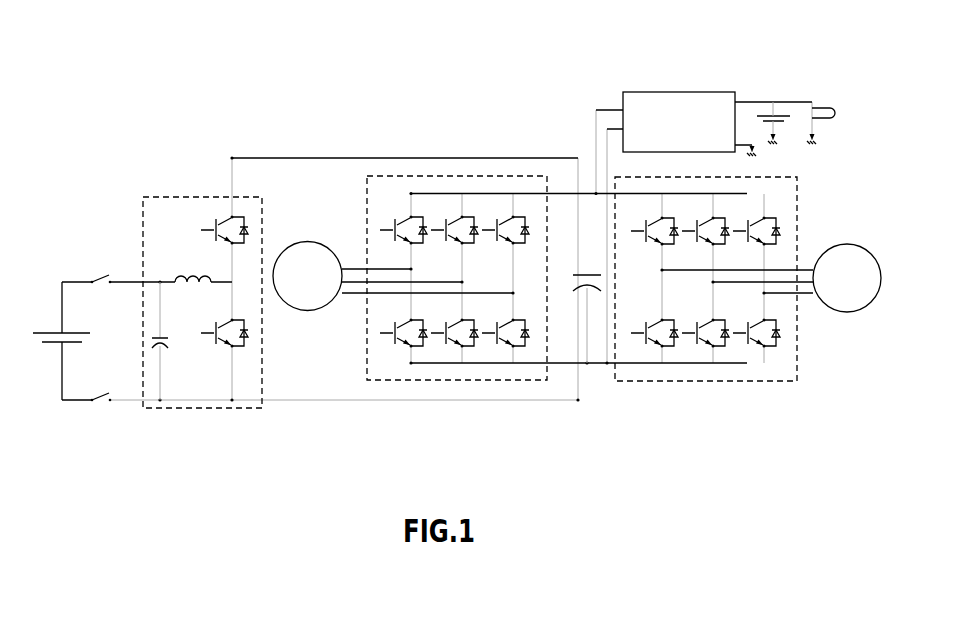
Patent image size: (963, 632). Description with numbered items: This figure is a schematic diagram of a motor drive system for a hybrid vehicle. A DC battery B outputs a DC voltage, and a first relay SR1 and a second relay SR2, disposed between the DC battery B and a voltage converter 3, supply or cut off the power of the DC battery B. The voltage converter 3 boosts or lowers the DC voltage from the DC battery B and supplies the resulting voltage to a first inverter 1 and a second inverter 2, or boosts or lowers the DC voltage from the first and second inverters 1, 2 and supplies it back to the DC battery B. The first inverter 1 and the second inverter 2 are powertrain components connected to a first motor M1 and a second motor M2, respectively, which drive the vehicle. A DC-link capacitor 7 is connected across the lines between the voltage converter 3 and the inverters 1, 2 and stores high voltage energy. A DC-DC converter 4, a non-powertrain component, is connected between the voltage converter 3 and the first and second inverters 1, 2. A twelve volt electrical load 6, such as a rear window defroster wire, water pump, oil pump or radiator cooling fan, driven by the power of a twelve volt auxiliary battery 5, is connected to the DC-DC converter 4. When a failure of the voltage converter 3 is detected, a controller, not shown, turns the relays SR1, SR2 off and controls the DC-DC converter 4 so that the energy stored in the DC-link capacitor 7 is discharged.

The first inverter 1 is at (470, 169).
The second inverter 2 is at (697, 392).
The voltage converter 3 is at (178, 191).
The DC-DC converter 4 is at (679, 122).
The 12 V battery 5 is at (757, 101).
The electrical load 6 is at (816, 100).
The DC-link capacitor 7 is at (587, 269).
The DC battery B is at (44, 316).
The first relay SR1 is at (95, 270).
The second relay SR2 is at (101, 388).
The first motor M1 is at (307, 276).
The second motor M2 is at (847, 278).